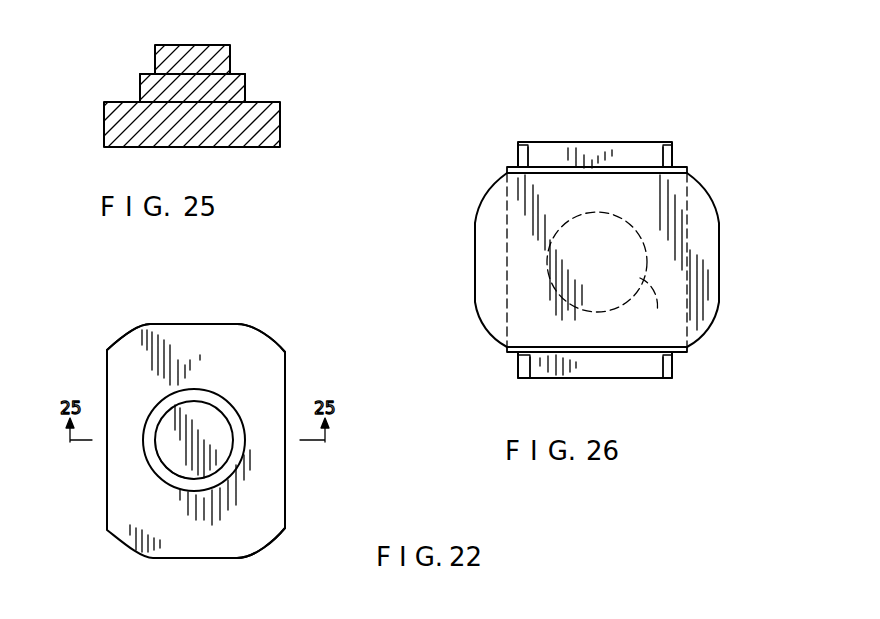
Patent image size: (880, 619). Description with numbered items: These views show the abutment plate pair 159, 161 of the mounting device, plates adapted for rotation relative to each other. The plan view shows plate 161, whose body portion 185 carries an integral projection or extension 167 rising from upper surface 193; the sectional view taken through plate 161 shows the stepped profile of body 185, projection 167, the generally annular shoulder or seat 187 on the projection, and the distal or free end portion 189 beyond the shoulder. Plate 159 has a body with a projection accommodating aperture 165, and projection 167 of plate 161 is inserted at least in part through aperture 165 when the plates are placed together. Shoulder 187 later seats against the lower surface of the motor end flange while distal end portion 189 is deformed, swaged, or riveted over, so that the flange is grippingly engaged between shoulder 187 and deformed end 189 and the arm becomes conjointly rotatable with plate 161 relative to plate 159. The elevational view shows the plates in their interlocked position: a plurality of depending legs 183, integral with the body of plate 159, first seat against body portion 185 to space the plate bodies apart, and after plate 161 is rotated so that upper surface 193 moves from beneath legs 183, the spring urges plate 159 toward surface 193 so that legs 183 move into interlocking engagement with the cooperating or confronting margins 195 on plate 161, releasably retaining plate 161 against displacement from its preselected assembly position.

In FIG. 25, the abutment plate 161 is at (287, 148).
In FIG. 22, the abutment plate 161 is at (286, 505).
In FIG. 26, the abutment plate 161 is at (707, 324).
In FIG. 26, the abutment plate 159 is at (674, 156).
In FIG. 26, the aperture 165 is at (657, 312).
In FIG. 25, the projection 167 is at (244, 88).
In FIG. 22, the projection 167 is at (166, 403).
In FIG. 26, the depending legs 183 is at (520, 158).
In FIG. 25, the body portion 185 is at (115, 155).
In FIG. 22, the body portion 185 is at (270, 546).
In FIG. 25, the annular shoulder 187 is at (148, 74).
In FIG. 22, the annular shoulder 187 is at (220, 405).
In FIG. 25, the distal end portion 189 is at (210, 50).
In FIG. 22, the distal end portion 189 is at (165, 464).
In FIG. 25, the upper surface 193 is at (128, 102).
In FIG. 22, the upper surface 193 is at (260, 470).
In FIG. 22, the margins 195 is at (107, 380).
In FIG. 26, the margins 195 is at (557, 160).